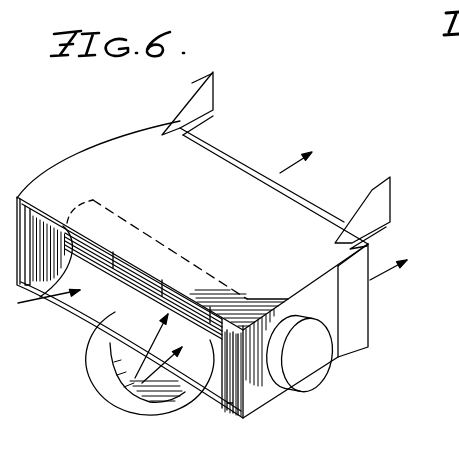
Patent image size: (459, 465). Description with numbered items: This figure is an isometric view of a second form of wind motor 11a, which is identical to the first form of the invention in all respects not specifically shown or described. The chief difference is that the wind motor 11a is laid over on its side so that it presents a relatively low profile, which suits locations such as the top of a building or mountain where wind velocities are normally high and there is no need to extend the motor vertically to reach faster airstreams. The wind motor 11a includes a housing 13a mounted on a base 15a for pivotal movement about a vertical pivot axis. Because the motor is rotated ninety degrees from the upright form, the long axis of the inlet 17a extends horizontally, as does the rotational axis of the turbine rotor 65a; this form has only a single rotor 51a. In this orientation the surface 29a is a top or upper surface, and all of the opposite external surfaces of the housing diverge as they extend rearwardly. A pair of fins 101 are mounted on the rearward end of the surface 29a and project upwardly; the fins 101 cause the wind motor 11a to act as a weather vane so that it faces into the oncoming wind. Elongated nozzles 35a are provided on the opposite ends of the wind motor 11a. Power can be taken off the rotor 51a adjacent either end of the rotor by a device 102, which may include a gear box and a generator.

The wind motor 11a is at (113, 128).
The housing 13a is at (122, 176).
The base 15a is at (123, 373).
The inlet 17a is at (84, 326).
The surface 29a is at (203, 162).
The elongated nozzles 35a is at (162, 118).
The rotor 51a is at (165, 312).
The turbine rotor 65a is at (212, 338).
The fins 101 is at (197, 93).
The device 102 is at (302, 366).